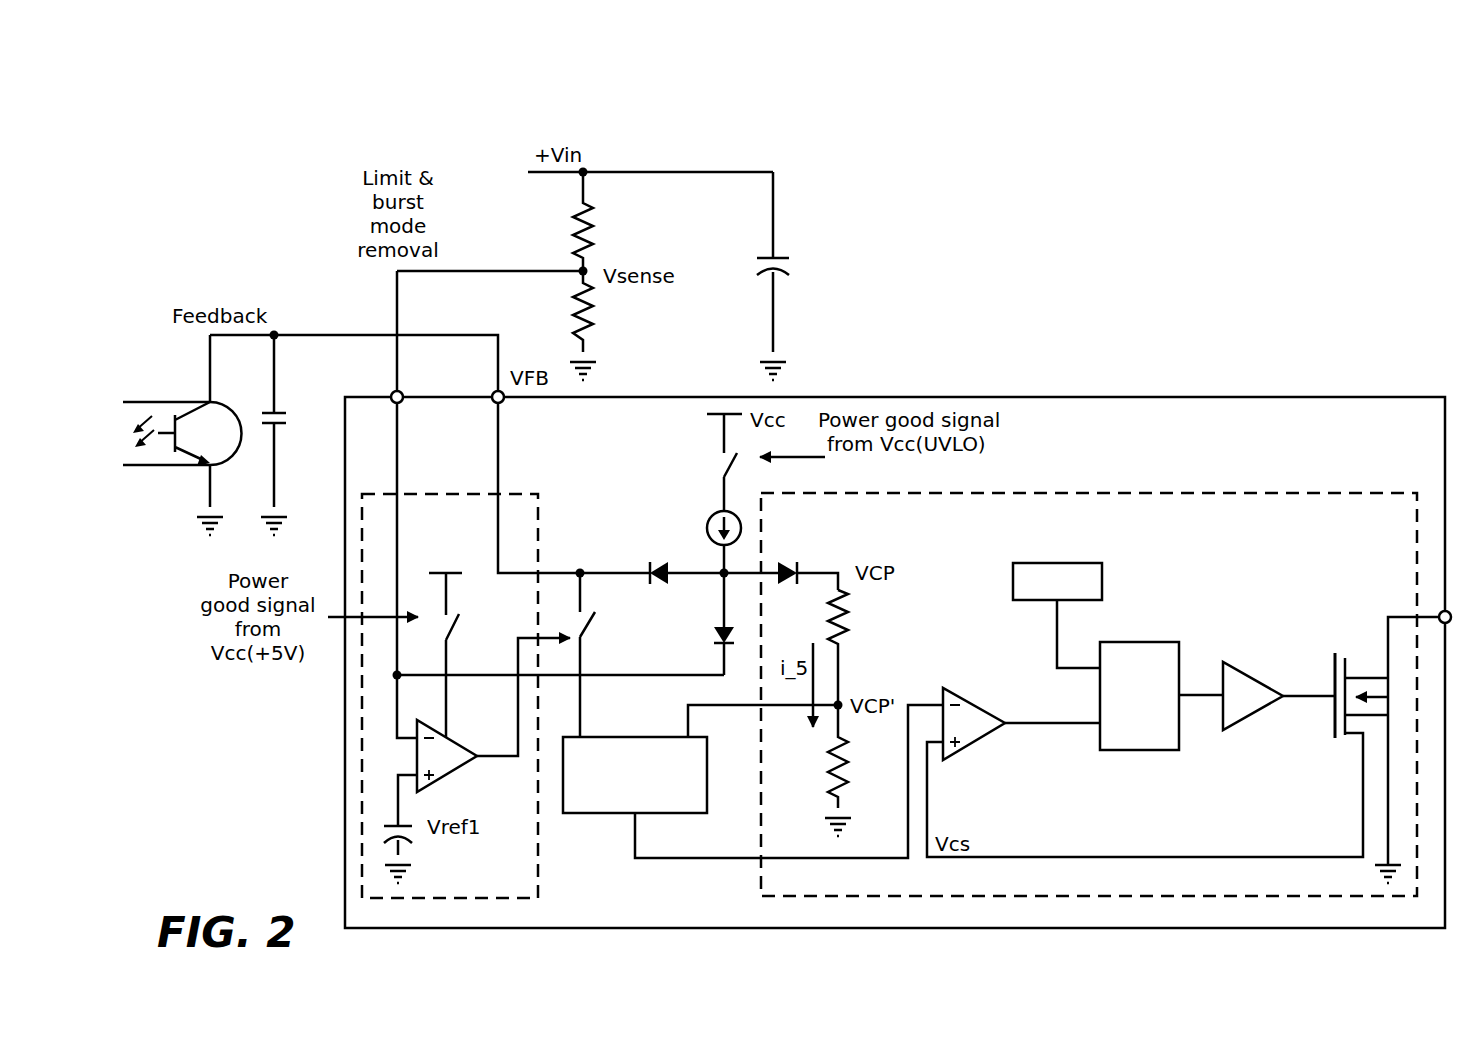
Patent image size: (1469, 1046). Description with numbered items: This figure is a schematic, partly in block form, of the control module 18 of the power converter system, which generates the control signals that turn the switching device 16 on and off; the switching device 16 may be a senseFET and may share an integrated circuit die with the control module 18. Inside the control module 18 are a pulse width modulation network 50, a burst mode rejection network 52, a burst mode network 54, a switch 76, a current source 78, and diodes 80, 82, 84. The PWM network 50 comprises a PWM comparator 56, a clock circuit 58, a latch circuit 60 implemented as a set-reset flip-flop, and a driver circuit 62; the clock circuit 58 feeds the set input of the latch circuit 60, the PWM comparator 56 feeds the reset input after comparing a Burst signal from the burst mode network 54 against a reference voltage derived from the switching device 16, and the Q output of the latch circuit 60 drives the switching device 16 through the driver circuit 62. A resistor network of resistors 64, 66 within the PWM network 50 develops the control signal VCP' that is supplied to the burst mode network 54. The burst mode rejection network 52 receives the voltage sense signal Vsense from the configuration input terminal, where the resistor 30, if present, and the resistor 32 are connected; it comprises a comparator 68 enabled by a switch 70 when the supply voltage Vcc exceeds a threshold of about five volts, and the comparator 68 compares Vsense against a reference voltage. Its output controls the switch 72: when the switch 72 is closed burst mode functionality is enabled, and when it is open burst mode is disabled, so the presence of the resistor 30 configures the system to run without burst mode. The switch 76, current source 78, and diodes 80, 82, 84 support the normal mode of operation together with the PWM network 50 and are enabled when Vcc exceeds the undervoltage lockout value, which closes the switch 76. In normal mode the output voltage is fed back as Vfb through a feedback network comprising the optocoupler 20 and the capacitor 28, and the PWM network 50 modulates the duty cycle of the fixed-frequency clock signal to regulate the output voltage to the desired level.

The switching device 16 is at (1335, 742).
The control module 18 is at (1228, 397).
The optocoupler 20 is at (140, 472).
The capacitor 28 is at (288, 432).
The resistor 30 is at (598, 215).
The resistor 32 is at (598, 335).
The pulse width modulation network 50 is at (1232, 493).
The burst mode rejection network 52 is at (540, 866).
The burst mode network 54 is at (600, 815).
The PWM comparator 56 is at (978, 742).
The clock circuit 58 is at (1073, 563).
The latch circuit 60 is at (1163, 642).
The driver circuit 62 is at (1255, 675).
The resistor 64 is at (848, 605).
The resistor 66 is at (828, 762).
The comparator 68 is at (460, 778).
The switch 70 is at (458, 620).
The switch 72 is at (594, 622).
The switch 76 is at (720, 462).
The current source 78 is at (707, 525).
The diode 80 is at (664, 556).
The diode 82 is at (717, 660).
The diode 84 is at (790, 586).